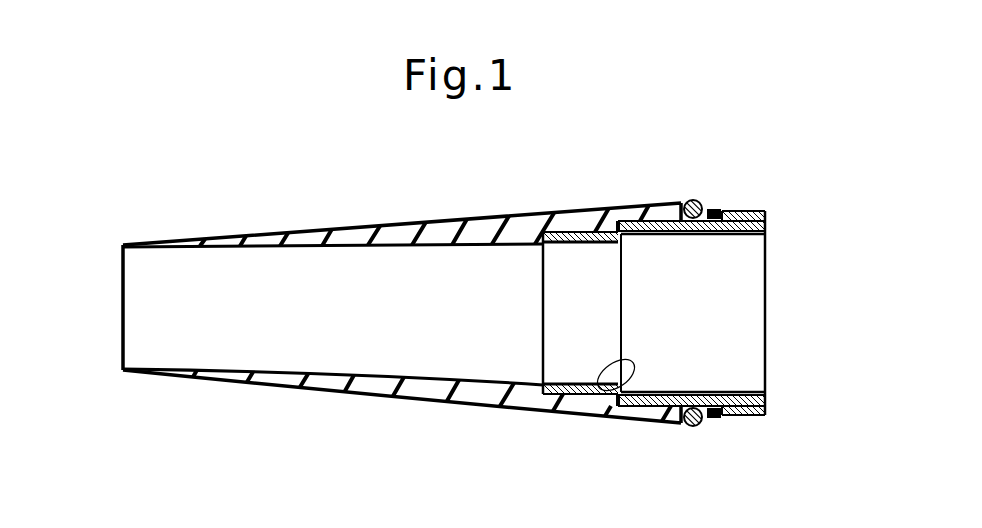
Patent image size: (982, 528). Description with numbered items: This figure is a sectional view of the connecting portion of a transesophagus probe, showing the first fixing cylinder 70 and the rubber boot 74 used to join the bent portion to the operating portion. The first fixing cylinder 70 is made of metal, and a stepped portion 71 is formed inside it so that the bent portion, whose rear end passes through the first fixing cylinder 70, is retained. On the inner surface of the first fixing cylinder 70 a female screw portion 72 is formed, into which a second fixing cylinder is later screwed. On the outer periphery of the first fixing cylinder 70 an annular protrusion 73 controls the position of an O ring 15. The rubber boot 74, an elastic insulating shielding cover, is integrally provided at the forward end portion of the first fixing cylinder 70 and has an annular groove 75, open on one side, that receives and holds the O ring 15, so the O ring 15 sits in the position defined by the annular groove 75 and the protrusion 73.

The rubber boot 74 is at (403, 226).
The first fixing cylinder 70 is at (572, 243).
The female screw portion 72 is at (697, 235).
The stepped portion 71 is at (600, 386).
The annular protrusion 73 is at (722, 207).
The O ring 15 is at (704, 204).
The annular groove 75 is at (687, 202).